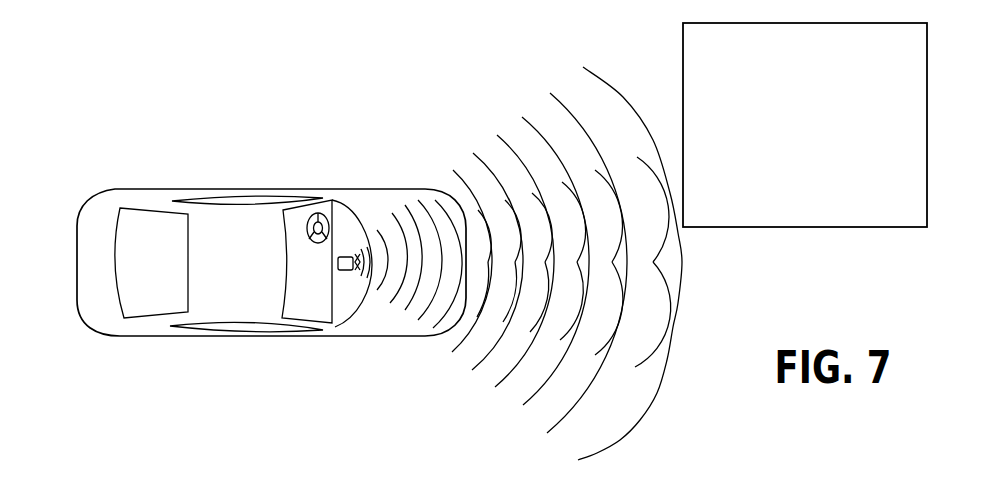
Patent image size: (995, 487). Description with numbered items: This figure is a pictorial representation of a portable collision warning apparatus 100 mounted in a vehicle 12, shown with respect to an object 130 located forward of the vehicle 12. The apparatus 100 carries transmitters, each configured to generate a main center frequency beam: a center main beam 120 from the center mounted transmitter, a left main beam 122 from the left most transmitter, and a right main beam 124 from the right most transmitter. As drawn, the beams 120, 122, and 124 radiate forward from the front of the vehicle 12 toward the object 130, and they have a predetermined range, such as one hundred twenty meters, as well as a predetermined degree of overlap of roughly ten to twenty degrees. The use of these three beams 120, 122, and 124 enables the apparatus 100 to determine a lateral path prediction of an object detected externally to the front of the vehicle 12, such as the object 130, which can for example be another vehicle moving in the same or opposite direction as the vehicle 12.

The vehicle 12 is at (170, 189).
The portable collision warning apparatus 100 is at (348, 240).
The center main beam 120 is at (682, 264).
The left main beam 122 is at (540, 128).
The right main beam 124 is at (527, 404).
The object 130 is at (682, 95).